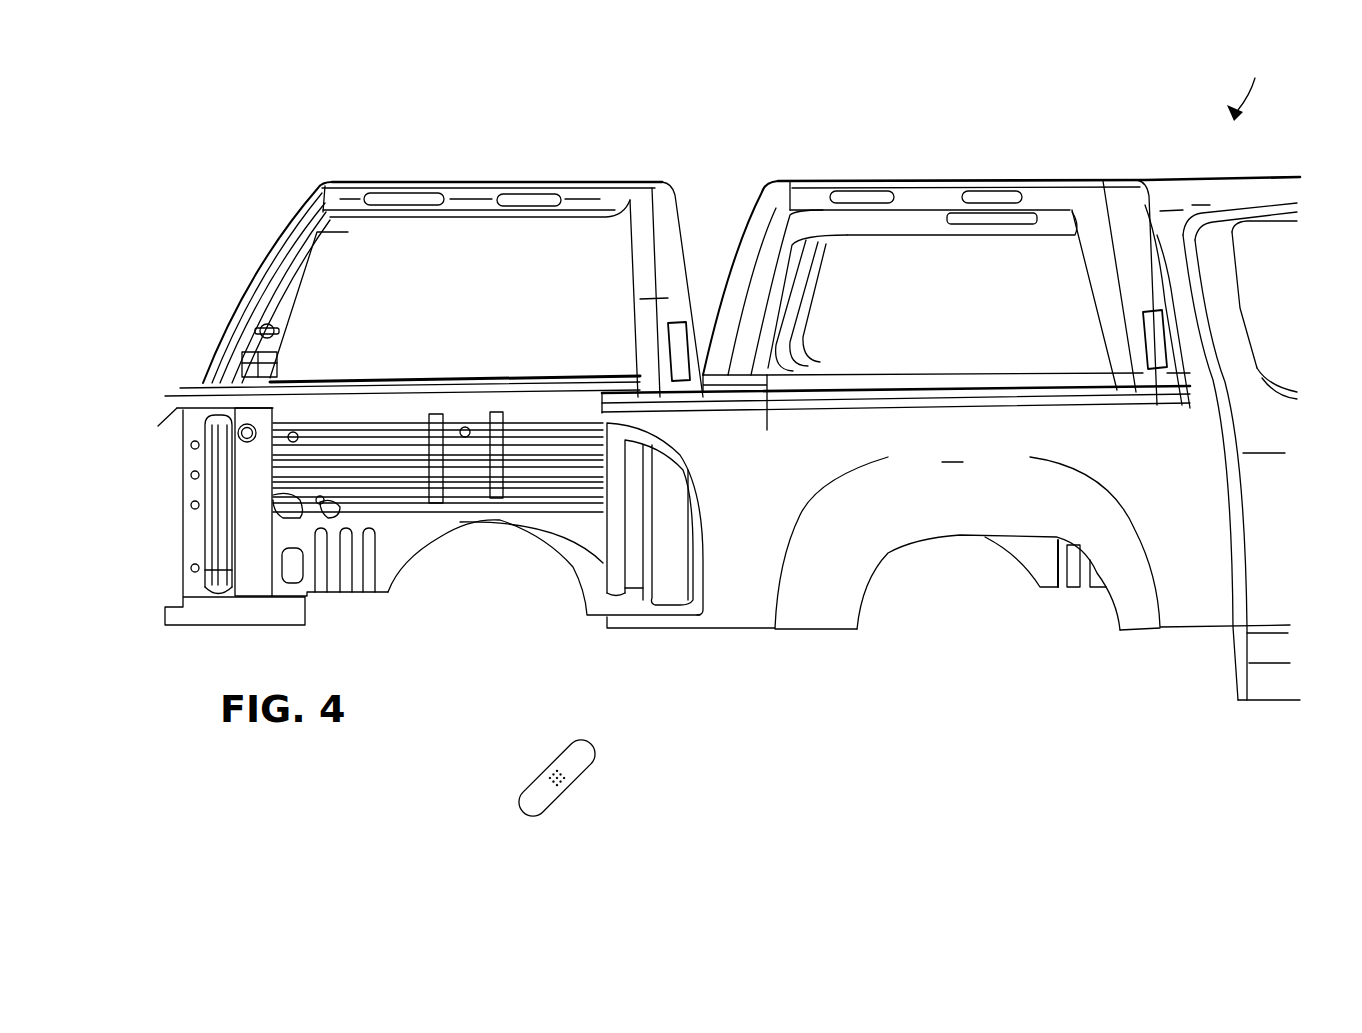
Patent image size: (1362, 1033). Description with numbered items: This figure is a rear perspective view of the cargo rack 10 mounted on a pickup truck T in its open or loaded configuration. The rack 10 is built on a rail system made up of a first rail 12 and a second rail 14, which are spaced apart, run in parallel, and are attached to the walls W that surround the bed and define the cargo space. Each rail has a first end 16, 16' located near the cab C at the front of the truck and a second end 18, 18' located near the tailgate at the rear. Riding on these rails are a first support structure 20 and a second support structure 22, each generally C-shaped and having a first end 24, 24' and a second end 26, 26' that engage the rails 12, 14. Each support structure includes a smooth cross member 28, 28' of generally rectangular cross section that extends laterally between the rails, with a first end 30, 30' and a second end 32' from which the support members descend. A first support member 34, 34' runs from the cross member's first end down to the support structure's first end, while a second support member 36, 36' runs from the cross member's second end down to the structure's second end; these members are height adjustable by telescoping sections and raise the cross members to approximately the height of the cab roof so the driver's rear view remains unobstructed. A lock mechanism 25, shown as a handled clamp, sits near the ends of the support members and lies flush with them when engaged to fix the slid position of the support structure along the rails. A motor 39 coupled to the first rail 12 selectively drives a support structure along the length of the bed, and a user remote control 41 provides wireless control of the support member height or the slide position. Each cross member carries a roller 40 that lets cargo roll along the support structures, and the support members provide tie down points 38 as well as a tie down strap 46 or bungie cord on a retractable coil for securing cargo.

The rack 10 is at (514, 132).
The first rail 12 is at (408, 381).
The second rail 14 is at (767, 414).
The first end of first rail 16 is at (785, 388).
The first end of second rail 16' is at (1187, 420).
The second end of first rail 18 is at (253, 516).
The second end of second rail 18' is at (878, 373).
The first support structure 20 is at (392, 182).
The second support structure 22 is at (1025, 178).
The first end of first support structure 24 is at (385, 404).
The first end of second support structure 24' is at (812, 305).
The lock mechanism 25 is at (680, 352).
The second end of first support structure 26 is at (674, 504).
The second end of second support structure 26' is at (1251, 372).
The cross member of first support structure 28 is at (470, 169).
The cross member of second support structure 28' is at (933, 187).
The first end of cross member 30 is at (272, 252).
The first end of second cross member 30' is at (763, 248).
The second end of second cross member 32' is at (892, 257).
The first support member 34 is at (275, 288).
The first support member of second support structure 34' is at (819, 301).
The second support member 36 is at (623, 299).
The second support member of second support structure 36' is at (1221, 306).
The tie down point 38 is at (262, 370).
The motor 39 is at (272, 380).
The roller 40 is at (414, 193).
The user remote control 41 is at (587, 770).
The tie down strap 46 is at (256, 332).
The truck T is at (1245, 87).
The walls W is at (953, 451).
The cab C is at (1230, 441).